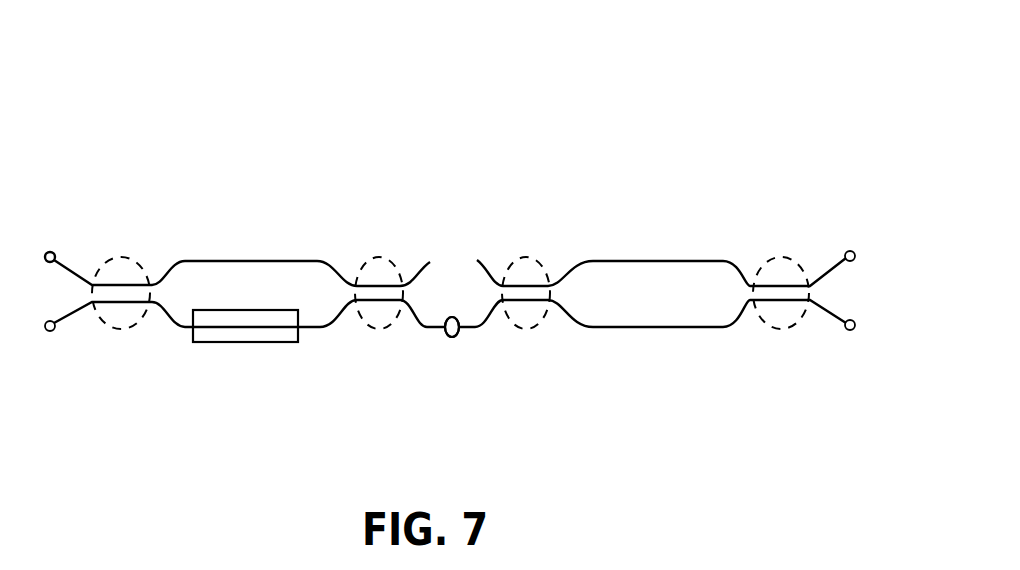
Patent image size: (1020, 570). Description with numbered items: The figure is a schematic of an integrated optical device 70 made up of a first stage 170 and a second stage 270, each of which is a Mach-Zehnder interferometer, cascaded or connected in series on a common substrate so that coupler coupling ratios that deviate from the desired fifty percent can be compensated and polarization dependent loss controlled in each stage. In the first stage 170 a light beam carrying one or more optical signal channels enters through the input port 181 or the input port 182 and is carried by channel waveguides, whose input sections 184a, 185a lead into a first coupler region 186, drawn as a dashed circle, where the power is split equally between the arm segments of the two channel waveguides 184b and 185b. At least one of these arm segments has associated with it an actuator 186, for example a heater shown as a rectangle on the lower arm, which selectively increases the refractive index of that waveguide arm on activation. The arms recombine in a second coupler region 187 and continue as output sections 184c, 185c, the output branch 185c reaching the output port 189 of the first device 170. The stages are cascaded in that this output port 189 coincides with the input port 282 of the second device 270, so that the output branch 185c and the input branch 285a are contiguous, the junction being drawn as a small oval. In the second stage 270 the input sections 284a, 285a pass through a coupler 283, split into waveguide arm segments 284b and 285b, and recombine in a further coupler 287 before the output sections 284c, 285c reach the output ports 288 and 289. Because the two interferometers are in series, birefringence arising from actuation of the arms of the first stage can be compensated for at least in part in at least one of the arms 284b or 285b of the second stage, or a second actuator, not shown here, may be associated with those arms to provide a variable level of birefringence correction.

The optical device 70 is at (256, 79).
The first stage 170 is at (272, 164).
The second stage 270 is at (664, 163).
The input port 181 is at (53, 252).
The input port 182 is at (51, 331).
The first waveguide input section 184a is at (92, 284).
The arm segment of channel waveguide 184b is at (218, 260).
The first waveguide output section 184c is at (418, 275).
The second waveguide input section 185a is at (80, 308).
The arm segment of channel waveguide 185b is at (260, 328).
The output branch 185c is at (415, 315).
The actuator 186 is at (218, 347).
The second coupler 187 is at (357, 312).
The output port 189 is at (455, 337).
The input port 282 is at (452, 393).
The input coupler of second interferometer 283 is at (543, 313).
The third waveguide input section 284a is at (482, 268).
The waveguide arm segment 284b is at (660, 260).
The third waveguide output section 284c is at (825, 270).
The input branch 285a is at (482, 315).
The waveguide arm segment 285b is at (660, 328).
The fourth waveguide output section 285c is at (823, 308).
The output coupler of second interferometer 287 is at (763, 318).
The output port 288 is at (848, 251).
The output port 289 is at (850, 331).